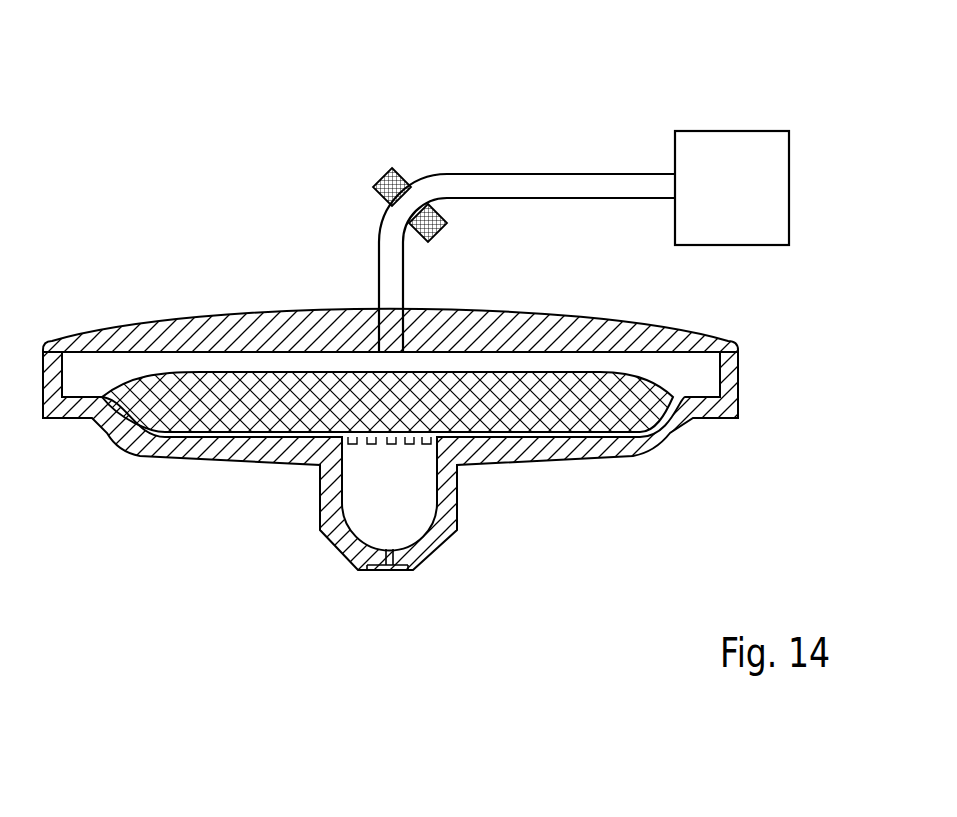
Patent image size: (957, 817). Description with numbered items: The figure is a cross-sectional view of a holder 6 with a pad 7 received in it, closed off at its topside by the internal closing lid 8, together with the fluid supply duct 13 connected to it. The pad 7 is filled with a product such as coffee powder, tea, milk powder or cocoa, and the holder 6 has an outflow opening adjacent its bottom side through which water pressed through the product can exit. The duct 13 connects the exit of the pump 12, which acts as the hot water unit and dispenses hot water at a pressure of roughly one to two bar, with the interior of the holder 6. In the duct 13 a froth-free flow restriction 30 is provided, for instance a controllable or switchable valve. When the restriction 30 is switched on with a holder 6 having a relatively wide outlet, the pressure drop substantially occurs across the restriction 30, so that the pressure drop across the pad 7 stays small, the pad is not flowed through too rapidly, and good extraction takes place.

The holder 6 is at (200, 445).
The pad 7 is at (262, 405).
The internal closing lid 8 is at (166, 335).
The pump 12 is at (733, 175).
The fluid duct 13 is at (515, 172).
The froth-free flow restriction 30 is at (392, 167).